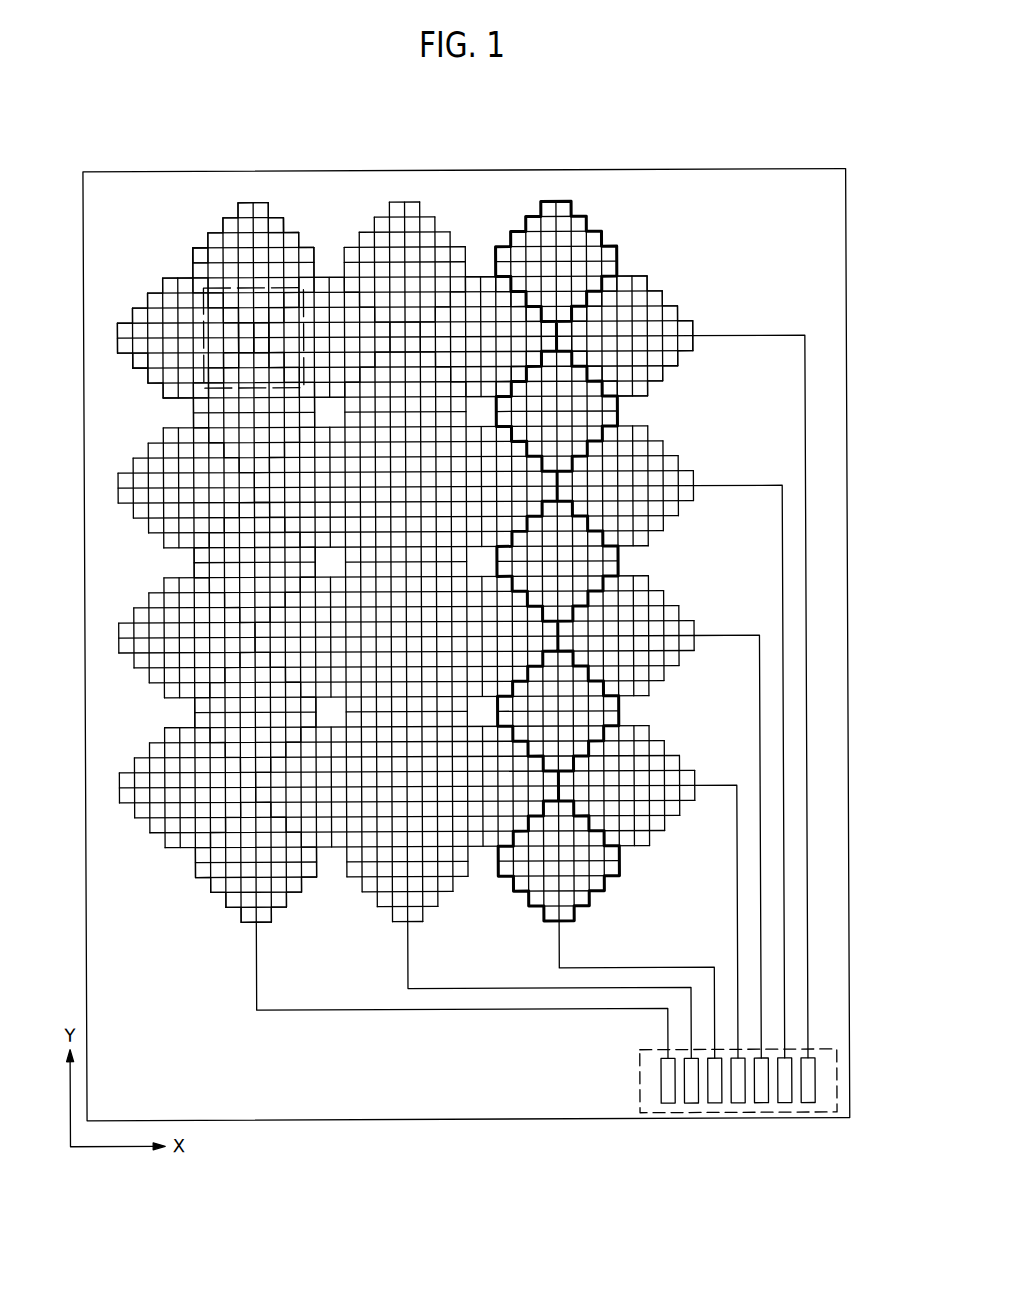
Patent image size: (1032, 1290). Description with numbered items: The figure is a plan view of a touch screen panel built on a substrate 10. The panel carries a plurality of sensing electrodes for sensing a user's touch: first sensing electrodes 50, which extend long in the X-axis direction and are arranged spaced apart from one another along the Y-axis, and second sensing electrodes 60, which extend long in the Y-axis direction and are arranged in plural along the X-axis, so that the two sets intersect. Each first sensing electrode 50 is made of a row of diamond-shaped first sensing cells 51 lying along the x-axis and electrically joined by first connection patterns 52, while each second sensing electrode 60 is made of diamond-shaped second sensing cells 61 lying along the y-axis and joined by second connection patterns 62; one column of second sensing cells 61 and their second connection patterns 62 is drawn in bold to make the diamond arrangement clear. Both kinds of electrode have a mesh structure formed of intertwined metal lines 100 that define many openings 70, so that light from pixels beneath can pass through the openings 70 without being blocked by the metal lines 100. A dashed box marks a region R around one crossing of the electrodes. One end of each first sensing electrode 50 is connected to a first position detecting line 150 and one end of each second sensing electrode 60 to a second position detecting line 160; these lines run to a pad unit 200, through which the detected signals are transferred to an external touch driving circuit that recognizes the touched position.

The substrate 10 is at (471, 169).
The first sensing electrode 50 is at (105, 332).
The first sensing cell 51 is at (131, 358).
The first connection pattern 52 is at (247, 337).
The second sensing electrode 60 is at (254, 189).
The second sensing cell 61 is at (274, 216).
The second connection pattern 62 is at (254, 329).
The opening 70 is at (205, 259).
The metal line 100 is at (587, 235).
The first position detecting line 150 is at (806, 750).
The second position detecting line 160 is at (368, 1010).
The pad unit 200 is at (836, 1082).
The region R is at (216, 288).